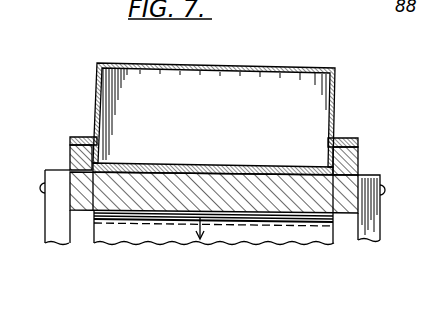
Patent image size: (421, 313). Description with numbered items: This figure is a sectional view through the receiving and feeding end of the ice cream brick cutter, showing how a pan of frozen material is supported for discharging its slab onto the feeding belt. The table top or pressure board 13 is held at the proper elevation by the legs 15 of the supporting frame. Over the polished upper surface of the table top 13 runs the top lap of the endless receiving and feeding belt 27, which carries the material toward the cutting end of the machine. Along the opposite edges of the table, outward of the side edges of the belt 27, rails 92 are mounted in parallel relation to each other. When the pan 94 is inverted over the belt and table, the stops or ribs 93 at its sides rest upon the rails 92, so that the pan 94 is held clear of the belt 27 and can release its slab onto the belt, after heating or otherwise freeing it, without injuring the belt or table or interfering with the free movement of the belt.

The pan 94 is at (250, 66).
The stops or ribs 93 is at (81, 137).
The rails 92 is at (70, 153).
The receiving and feeding belt 27 is at (218, 162).
The table top or pressure board 13 is at (82, 193).
The legs 15 is at (376, 228).